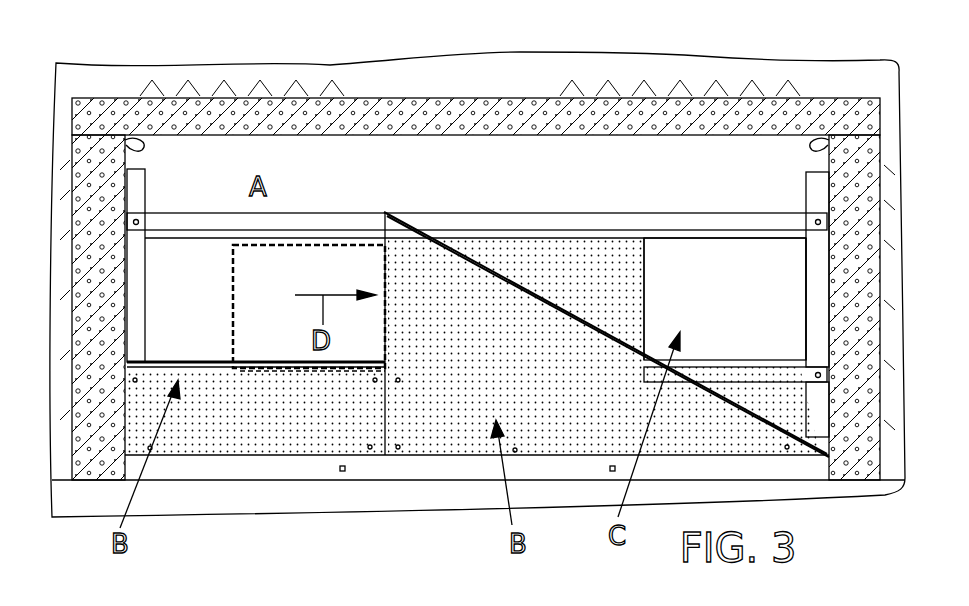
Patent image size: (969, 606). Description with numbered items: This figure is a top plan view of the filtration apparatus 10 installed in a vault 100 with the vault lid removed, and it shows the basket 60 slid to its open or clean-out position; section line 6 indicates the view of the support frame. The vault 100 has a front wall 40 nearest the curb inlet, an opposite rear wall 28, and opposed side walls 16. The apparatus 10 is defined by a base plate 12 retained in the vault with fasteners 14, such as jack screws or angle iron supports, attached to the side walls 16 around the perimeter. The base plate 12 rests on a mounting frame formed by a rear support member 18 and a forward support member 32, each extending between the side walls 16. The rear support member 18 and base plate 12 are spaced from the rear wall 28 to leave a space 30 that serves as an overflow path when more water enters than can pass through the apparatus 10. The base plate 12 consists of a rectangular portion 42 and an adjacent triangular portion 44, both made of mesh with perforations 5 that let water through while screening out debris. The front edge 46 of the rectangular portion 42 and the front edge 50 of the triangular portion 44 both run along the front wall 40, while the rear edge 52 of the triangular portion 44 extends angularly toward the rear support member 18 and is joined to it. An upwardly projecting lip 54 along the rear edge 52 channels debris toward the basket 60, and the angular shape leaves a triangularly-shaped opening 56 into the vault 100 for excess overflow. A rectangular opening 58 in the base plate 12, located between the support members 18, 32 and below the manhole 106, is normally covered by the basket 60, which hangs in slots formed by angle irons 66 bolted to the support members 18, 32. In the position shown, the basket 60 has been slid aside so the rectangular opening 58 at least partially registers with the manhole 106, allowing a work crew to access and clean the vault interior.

The vault 100 is at (808, 70).
The filtration apparatus 10 is at (166, 535).
The base plate 12 is at (343, 495).
The fasteners 14 is at (138, 186).
The side walls 16 is at (136, 138).
The rear support member 18 is at (679, 208).
The rear wall 28 is at (401, 136).
The space 30 is at (610, 163).
The forward support member 32 is at (730, 376).
The front wall 40 is at (437, 468).
The rectangular portion 42 is at (289, 438).
The triangular portion 44 is at (600, 290).
The front edge 46 is at (222, 458).
The front edge 50 is at (550, 456).
The rear edge 52 is at (548, 290).
The upwardly projecting lip 54 is at (490, 285).
The triangularly-shaped opening 56 is at (765, 268).
The rectangular opening 58 is at (172, 312).
The basket 60 is at (655, 318).
The angle iron 66 is at (671, 236).
The manhole 106 is at (314, 244).
The perforations 5 is at (462, 245).
The section line 6 is at (175, 183).